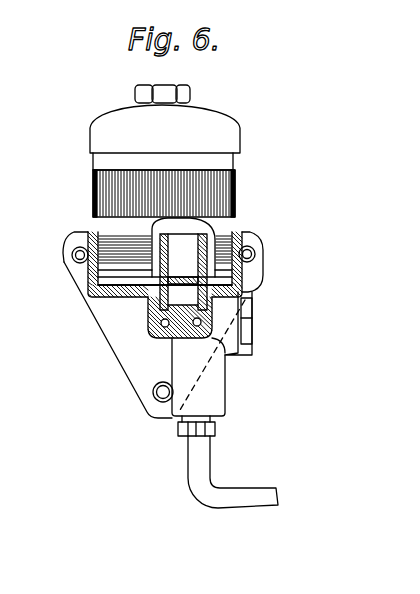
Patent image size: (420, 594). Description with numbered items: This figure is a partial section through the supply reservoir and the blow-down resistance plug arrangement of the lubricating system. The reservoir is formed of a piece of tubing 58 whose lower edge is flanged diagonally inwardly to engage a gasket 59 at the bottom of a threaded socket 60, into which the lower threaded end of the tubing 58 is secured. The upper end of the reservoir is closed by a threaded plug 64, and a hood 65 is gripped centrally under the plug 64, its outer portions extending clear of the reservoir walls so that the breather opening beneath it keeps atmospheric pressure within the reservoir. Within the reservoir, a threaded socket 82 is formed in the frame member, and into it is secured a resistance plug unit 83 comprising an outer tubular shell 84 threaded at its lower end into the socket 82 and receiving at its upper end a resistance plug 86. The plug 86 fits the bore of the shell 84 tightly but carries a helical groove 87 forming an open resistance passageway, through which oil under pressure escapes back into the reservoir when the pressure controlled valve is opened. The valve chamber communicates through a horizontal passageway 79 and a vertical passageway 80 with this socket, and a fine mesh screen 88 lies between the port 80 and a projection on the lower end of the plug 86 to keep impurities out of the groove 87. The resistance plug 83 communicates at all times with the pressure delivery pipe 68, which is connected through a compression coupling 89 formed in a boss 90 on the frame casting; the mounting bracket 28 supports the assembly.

The threaded plug 64 is at (191, 94).
The hood 65 is at (224, 123).
The tubing 58 is at (237, 187).
The outer tubular shell 84 is at (243, 232).
The helical groove 87 is at (128, 305).
The resistance plug unit 83 is at (125, 272).
The threaded socket 82 is at (165, 285).
The screen 88 is at (155, 302).
The threaded socket 60 is at (72, 252).
The resistance plug 86 is at (256, 256).
The gasket 59 is at (243, 289).
The bracket 28 is at (165, 323).
The boss 90 is at (228, 393).
The vertical passageway 80 is at (242, 312).
The passageway 79 is at (240, 327).
The compression coupling 89 is at (182, 428).
The pressure delivery pipe 68 is at (262, 475).